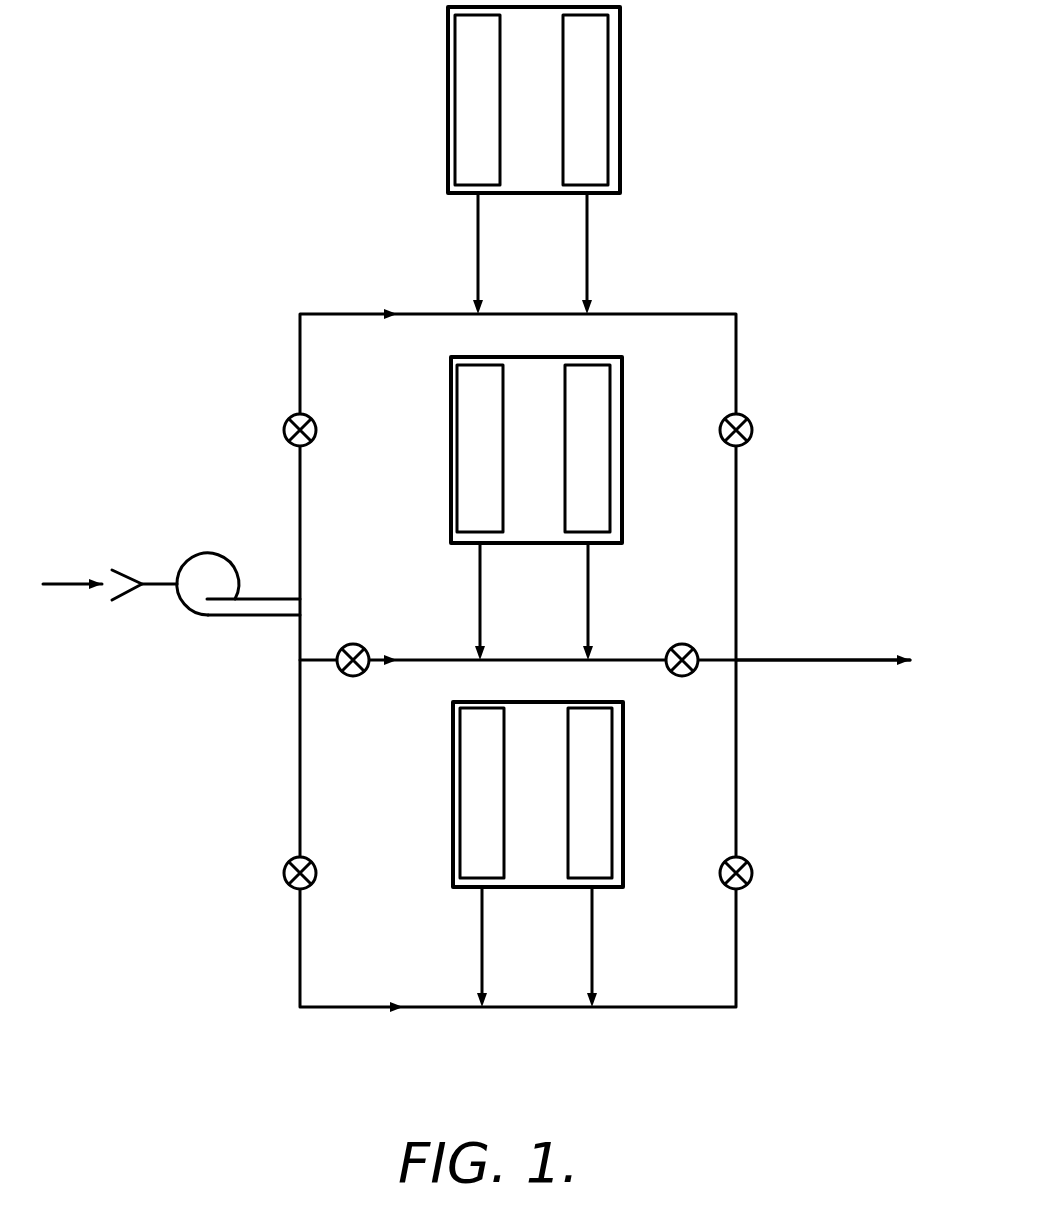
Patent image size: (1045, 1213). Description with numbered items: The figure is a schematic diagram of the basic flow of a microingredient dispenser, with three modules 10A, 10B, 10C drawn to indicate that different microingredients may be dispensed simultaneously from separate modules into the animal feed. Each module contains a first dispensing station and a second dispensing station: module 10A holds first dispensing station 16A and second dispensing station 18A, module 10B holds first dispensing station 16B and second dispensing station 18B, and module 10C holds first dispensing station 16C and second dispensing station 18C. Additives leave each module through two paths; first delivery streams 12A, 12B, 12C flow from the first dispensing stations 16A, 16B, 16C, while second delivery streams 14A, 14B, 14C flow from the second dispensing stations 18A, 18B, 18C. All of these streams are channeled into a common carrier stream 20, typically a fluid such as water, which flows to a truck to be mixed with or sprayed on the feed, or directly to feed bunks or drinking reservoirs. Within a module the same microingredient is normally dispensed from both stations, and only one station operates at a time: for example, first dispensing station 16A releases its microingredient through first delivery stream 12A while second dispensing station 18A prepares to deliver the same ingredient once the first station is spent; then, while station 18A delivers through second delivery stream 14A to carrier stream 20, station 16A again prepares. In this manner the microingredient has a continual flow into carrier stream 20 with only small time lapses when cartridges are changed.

The module 10A is at (410, 214).
The module 10B is at (425, 560).
The module 10C is at (425, 909).
The first delivery stream 12A is at (478, 243).
The first delivery stream 12B is at (480, 595).
The first delivery stream 12C is at (482, 940).
The second delivery stream 14A is at (587, 268).
The second delivery stream 14B is at (588, 615).
The second delivery stream 14C is at (592, 960).
The first dispensing station 16A is at (462, 82).
The first dispensing station 16B is at (462, 428).
The first dispensing station 16C is at (465, 775).
The second dispensing station 18A is at (600, 82).
The second dispensing station 18B is at (602, 429).
The second dispensing station 18C is at (603, 777).
The carrier stream 20 is at (855, 662).